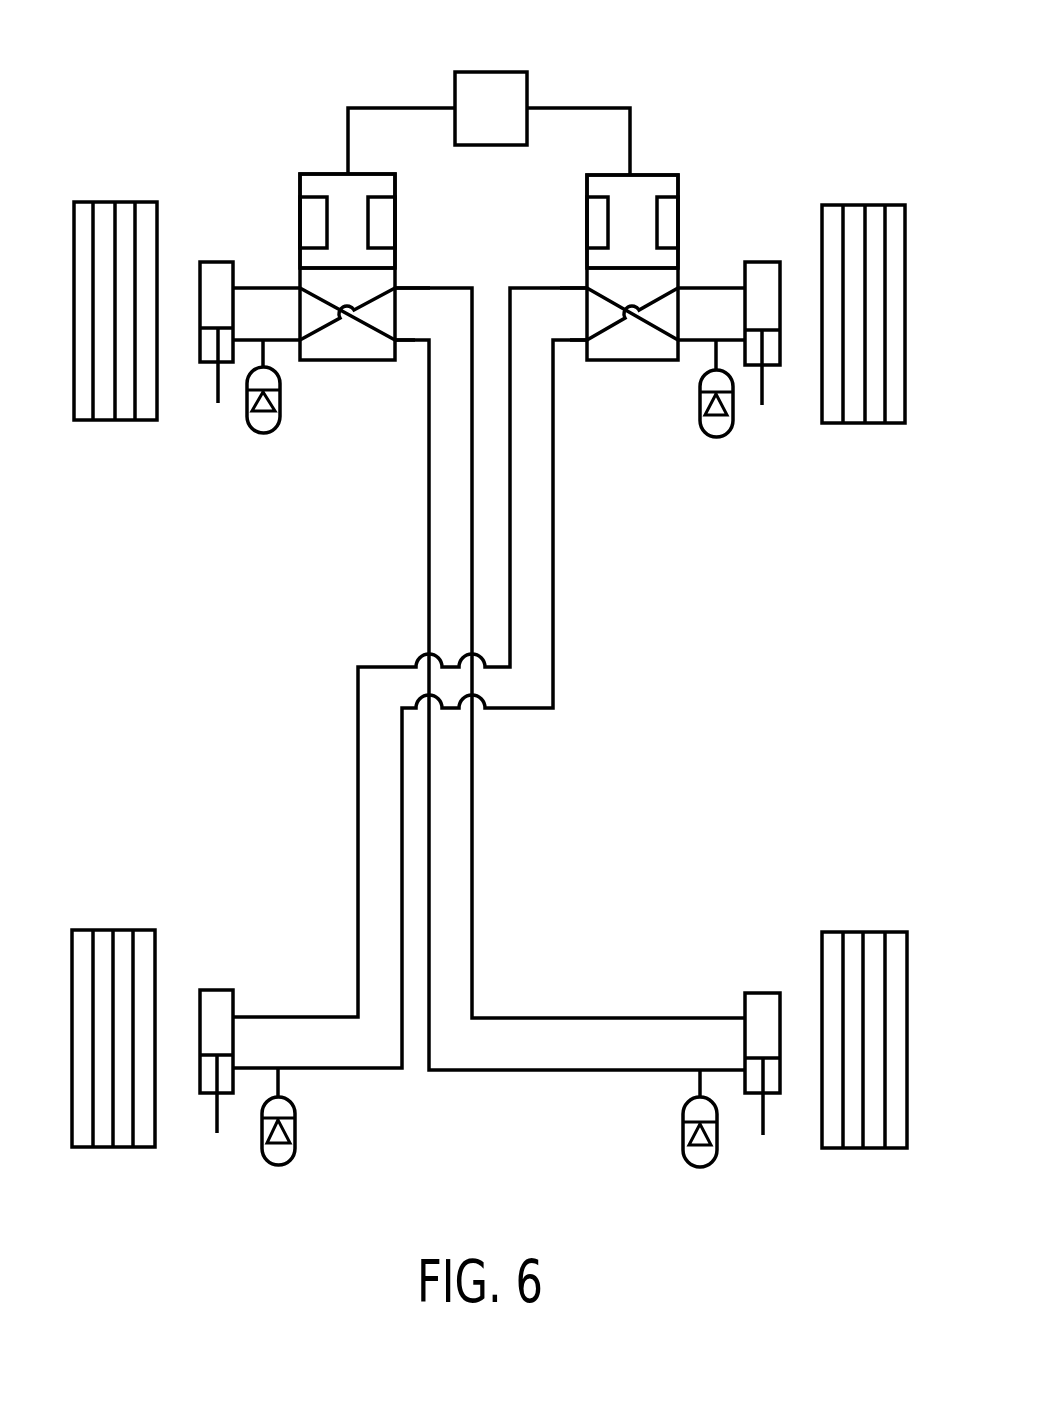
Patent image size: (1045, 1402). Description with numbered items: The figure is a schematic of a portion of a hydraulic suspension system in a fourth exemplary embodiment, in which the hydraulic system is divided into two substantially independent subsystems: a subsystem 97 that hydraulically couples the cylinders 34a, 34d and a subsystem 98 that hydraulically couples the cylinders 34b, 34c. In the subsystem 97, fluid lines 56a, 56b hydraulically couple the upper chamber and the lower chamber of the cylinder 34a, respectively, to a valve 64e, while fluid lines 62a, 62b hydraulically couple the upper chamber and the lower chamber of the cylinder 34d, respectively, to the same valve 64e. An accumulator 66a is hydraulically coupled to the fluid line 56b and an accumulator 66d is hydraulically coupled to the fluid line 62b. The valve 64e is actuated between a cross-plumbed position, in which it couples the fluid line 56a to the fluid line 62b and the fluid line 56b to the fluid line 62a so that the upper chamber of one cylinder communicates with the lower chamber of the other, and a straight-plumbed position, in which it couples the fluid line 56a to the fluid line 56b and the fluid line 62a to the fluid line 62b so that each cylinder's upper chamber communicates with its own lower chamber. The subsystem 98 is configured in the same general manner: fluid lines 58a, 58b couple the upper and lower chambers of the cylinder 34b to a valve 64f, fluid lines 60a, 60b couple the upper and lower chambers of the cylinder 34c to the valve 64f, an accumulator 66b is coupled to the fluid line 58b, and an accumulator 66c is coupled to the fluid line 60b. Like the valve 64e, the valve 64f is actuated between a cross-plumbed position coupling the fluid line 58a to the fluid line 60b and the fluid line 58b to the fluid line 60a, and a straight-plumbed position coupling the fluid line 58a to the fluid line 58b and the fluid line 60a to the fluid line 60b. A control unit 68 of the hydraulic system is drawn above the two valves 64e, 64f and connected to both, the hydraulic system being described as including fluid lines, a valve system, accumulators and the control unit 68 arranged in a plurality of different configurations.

The cylinder 34a is at (217, 253).
The cylinder 34b is at (773, 254).
The cylinder 34c is at (217, 983).
The cylinder 34d is at (763, 986).
The fluid line 56a is at (257, 287).
The fluid line 56b is at (288, 317).
The fluid line 58a is at (725, 287).
The fluid line 58b is at (698, 338).
The fluid line 60a is at (387, 665).
The fluid line 60b is at (410, 707).
The fluid line 62a is at (608, 1017).
The fluid line 62b is at (588, 1072).
The valve 64e is at (322, 166).
The valve 64f is at (660, 167).
The accumulator 66a is at (265, 433).
The accumulator 66b is at (722, 436).
The accumulator 66c is at (293, 1147).
The accumulator 66d is at (716, 1152).
The control unit 68 is at (488, 70).
The subsystem 97 is at (441, 256).
The subsystem 98 is at (547, 246).